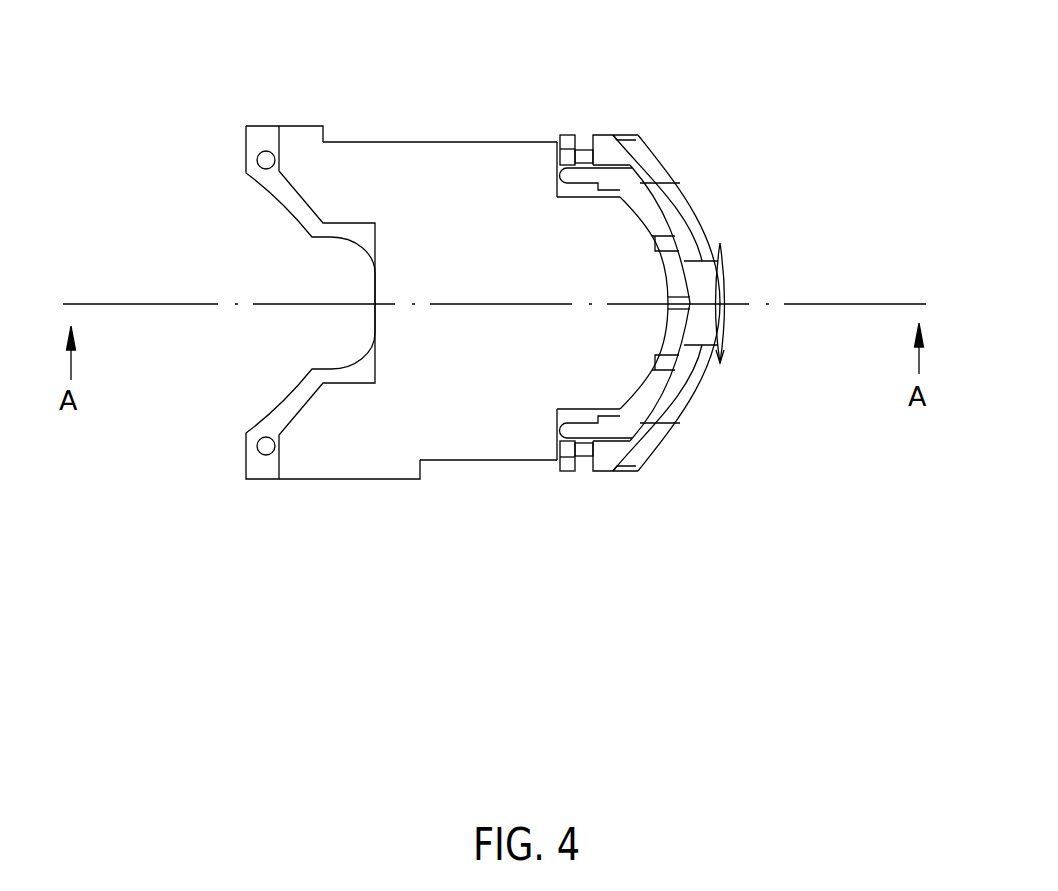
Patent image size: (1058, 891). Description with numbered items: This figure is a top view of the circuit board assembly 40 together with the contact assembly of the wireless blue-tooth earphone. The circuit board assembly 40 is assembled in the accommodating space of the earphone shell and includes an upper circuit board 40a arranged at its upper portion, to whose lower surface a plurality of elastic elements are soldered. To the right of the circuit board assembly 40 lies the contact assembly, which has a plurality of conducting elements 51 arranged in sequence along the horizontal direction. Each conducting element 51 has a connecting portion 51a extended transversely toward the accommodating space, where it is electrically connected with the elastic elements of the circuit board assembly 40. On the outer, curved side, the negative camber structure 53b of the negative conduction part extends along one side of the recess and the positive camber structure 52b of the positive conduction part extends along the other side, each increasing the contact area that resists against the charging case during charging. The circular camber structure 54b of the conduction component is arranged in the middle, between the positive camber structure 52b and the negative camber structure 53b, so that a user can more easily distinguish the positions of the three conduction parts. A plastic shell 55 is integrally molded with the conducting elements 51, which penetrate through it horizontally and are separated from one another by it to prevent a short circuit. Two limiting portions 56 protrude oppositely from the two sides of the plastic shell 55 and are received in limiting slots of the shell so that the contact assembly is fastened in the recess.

The circuit board assembly 40 is at (401, 260).
The upper circuit board 40a is at (410, 151).
The conducting element 51 is at (698, 314).
The connecting portion 51a is at (652, 237).
The negative camber structure 53b is at (705, 203).
The positive camber structure 52b is at (702, 397).
The circular camber structure 54b is at (727, 284).
The plastic shell 55 is at (723, 347).
The limiting portion 56 is at (568, 463).